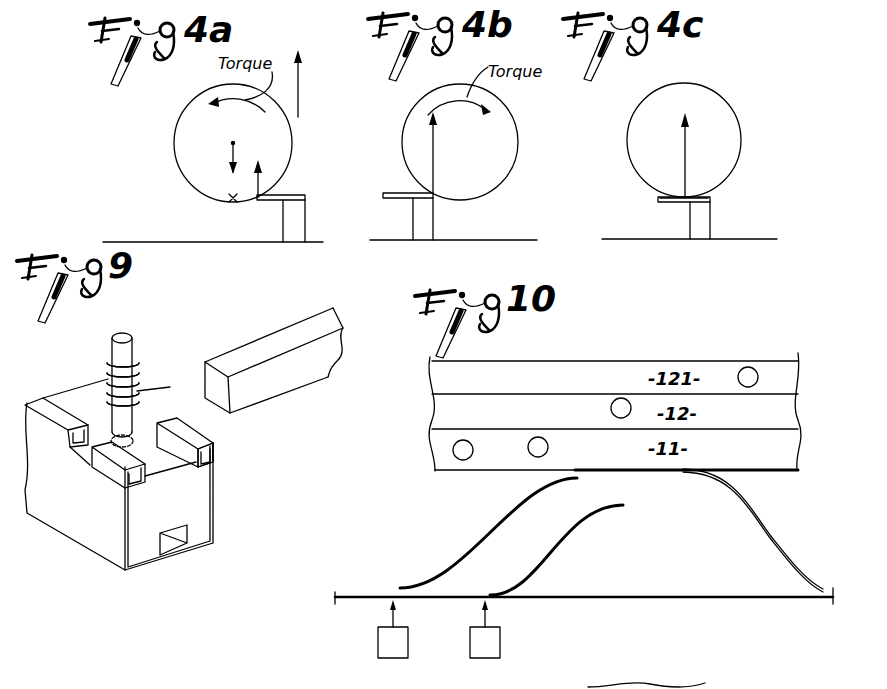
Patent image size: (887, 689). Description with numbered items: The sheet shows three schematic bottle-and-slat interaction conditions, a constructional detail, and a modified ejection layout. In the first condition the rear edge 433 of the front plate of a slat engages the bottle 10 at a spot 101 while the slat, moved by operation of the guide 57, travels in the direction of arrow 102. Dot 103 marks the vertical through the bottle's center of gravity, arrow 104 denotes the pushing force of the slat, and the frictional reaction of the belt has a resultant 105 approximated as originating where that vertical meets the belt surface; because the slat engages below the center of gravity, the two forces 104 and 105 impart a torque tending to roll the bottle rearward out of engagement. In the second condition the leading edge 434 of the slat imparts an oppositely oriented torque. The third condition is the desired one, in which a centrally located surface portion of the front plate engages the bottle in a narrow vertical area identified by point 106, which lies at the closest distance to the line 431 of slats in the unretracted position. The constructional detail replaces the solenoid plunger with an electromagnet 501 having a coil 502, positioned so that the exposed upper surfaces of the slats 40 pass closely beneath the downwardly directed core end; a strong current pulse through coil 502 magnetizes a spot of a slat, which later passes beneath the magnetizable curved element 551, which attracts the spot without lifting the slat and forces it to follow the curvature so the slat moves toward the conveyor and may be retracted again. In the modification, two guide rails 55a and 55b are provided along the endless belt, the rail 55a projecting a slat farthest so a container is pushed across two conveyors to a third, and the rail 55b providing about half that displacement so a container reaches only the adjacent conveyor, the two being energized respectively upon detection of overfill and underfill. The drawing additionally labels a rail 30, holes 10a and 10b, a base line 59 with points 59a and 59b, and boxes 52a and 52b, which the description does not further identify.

In FIG. 4A, the bottle 10 is at (178, 122).
In FIG. 4A, the arrow of slat motion direction 102 is at (300, 78).
In FIG. 4A, the dot marking vertical through center of gravity 103 is at (231, 144).
In FIG. 4A, the pushing force arrow 104 is at (263, 163).
In FIG. 4A, the resultant frictional reaction force 105 is at (232, 160).
In FIG. 4A, the point of desired engagement 106 is at (231, 200).
In FIG. 4C, the point of desired engagement 106 is at (687, 197).
In FIG. 4A, the engagement spot 101 is at (263, 193).
In FIG. 4A, the rear edge of front plate 433 is at (258, 200).
In FIG. 4B, the leading edge of slat 434 is at (425, 198).
In FIG. 4A, the slat 40 is at (298, 227).
In FIG. 4B, the slat 40 is at (423, 228).
In FIG. 4C, the slat 40 is at (703, 220).
In FIG. 9, the slat 40 is at (192, 507).
In FIG. 4A, the line of slats in unretracted position 431 is at (210, 242).
In FIG. 4B, the line of slats in unretracted position 431 is at (503, 240).
In FIG. 4C, the line of slats in unretracted position 431 is at (743, 240).
In FIG. 9, the channel rail 30 is at (214, 462).
In FIG. 9, the electromagnet 501 is at (138, 336).
In FIG. 9, the coil 502 is at (140, 358).
In FIG. 9, the guide element 551 is at (280, 380).
In FIG. 10, the hole 10a is at (465, 461).
In FIG. 10, the hole 10b is at (546, 414).
In FIG. 10, the guide 57 is at (750, 503).
In FIG. 10, the base line 59 is at (558, 600).
In FIG. 10, the guide rail 55a is at (505, 506).
In FIG. 10, the guide rail 55b is at (567, 535).
In FIG. 10, the position a 59a is at (392, 596).
In FIG. 10, the position b 59b is at (484, 595).
In FIG. 10, the actuator a 52a is at (392, 641).
In FIG. 10, the actuator b 52b is at (486, 643).